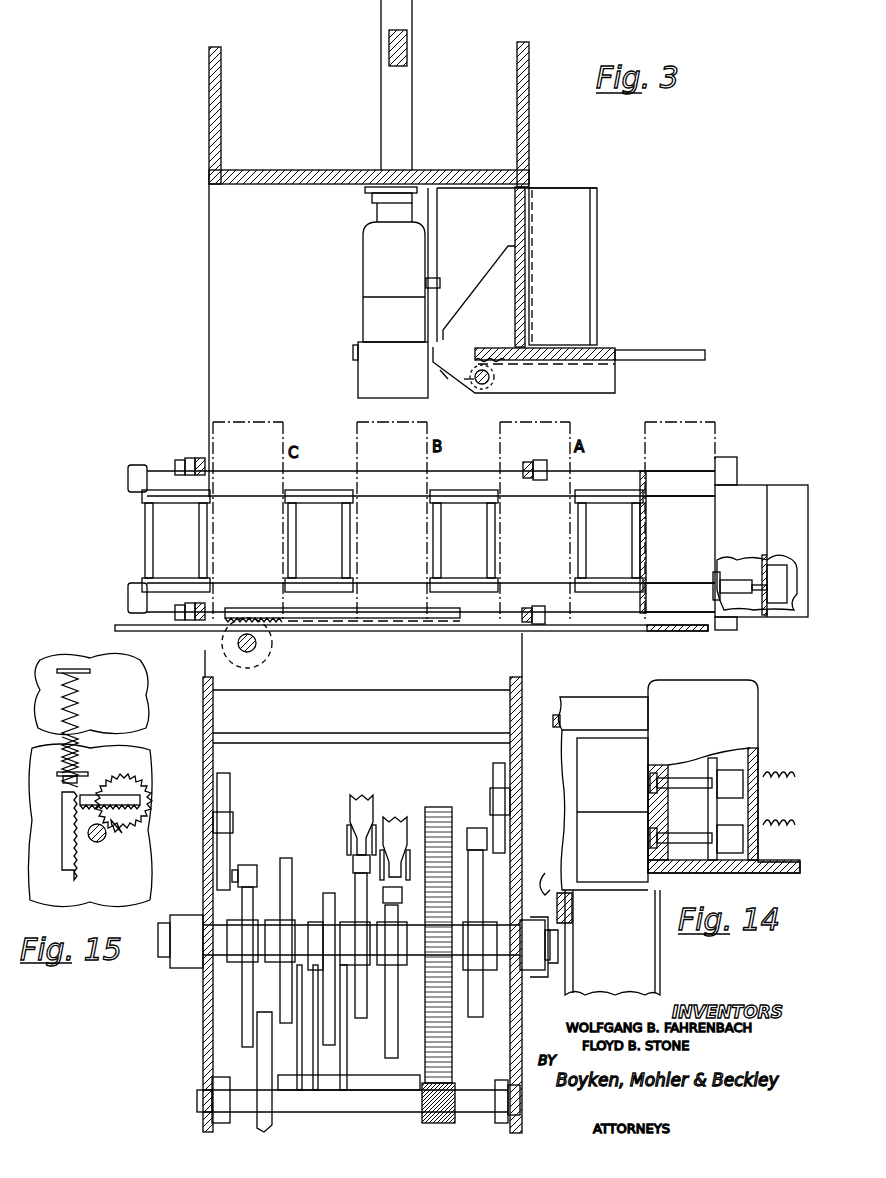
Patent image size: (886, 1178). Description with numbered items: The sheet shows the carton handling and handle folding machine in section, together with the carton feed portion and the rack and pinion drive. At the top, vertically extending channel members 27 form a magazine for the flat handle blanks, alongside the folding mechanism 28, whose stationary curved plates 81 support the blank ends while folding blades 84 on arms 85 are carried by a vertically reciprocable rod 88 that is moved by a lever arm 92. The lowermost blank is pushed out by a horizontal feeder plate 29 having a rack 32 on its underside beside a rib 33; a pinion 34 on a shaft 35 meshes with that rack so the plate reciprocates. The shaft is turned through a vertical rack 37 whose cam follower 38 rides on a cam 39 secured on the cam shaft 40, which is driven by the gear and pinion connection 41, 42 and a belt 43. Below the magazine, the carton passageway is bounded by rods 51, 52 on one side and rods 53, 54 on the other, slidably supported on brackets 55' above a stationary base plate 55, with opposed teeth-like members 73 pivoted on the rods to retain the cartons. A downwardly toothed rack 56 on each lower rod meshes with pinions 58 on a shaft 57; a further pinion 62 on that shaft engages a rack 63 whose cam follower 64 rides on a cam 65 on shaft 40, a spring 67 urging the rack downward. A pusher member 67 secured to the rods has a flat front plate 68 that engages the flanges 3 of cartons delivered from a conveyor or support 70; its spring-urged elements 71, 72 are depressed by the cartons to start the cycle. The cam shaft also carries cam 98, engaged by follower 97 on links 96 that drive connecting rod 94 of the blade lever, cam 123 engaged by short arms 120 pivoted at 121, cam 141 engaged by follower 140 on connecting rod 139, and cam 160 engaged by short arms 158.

In FIG. 14, the flange 3 is at (602, 890).
In FIG. 3, the channel members 27 is at (597, 256).
In FIG. 3, the folding mechanism 28 is at (454, 229).
In FIG. 3, the feeder plate 29 is at (610, 350).
In FIG. 3, the rack 32 is at (612, 372).
In FIG. 3, the rib 33 is at (443, 379).
In FIG. 3, the pinion 34 is at (474, 382).
In FIG. 3, the shaft 35 is at (482, 390).
In FIG. 3, the rack 37 is at (493, 770).
In FIG. 3, the cam follower 38 is at (472, 828).
In FIG. 3, the cam 39 is at (483, 906).
In FIG. 3, the shaft 40 is at (501, 963).
In FIG. 3, the gear 41 is at (452, 1061).
In FIG. 3, the pinion 42 is at (455, 1091).
In FIG. 3, the belt 43 is at (260, 1059).
In FIG. 3, the rod 51 is at (648, 472).
In FIG. 14, the rod 51 is at (600, 703).
In FIG. 3, the rod 52 is at (650, 631).
In FIG. 3, the rod 53 is at (603, 476).
In FIG. 14, the rod 53 is at (545, 877).
In FIG. 3, the rod 54 is at (578, 616).
In FIG. 3, the base plate 55 is at (387, 613).
In FIG. 14, the base plate 55 is at (592, 810).
In FIG. 3, the brackets 55' is at (377, 535).
In FIG. 3, the rack 56 is at (277, 623).
In FIG. 15, the rack 56 is at (103, 800).
In FIG. 3, the shaft 57 is at (238, 643).
In FIG. 15, the shaft 57 is at (105, 840).
In FIG. 3, the pinions 58 is at (263, 657).
In FIG. 15, the pinion 62 is at (118, 838).
In FIG. 3, the rack 63 is at (230, 810).
In FIG. 15, the rack 63 is at (62, 855).
In FIG. 3, the cam follower 64 is at (246, 865).
In FIG. 3, the cam 65 is at (242, 1017).
In FIG. 3, the pusher member 67 is at (753, 479).
In FIG. 14, the pusher member 67 is at (767, 699).
In FIG. 15, the pusher member 67 is at (82, 712).
In FIG. 14, the front plate 68 is at (648, 818).
In FIG. 14, the conveyor or support 70 is at (640, 985).
In FIG. 14, the movable element 71 is at (650, 790).
In FIG. 3, the movable element 72 is at (706, 594).
In FIG. 14, the movable element 72 is at (650, 840).
In FIG. 3, the teeth-like members 73 is at (155, 538).
In FIG. 3, the stationary plates 81 is at (358, 368).
In FIG. 3, the folding blades 84 is at (363, 313).
In FIG. 3, the arms 85 is at (363, 258).
In FIG. 3, the rod 88 is at (412, 118).
In FIG. 3, the lever arm 92 is at (408, 46).
In FIG. 3, the connecting rod 94 is at (360, 797).
In FIG. 3, the short links 96 is at (352, 828).
In FIG. 3, the cam follower 97 is at (353, 862).
In FIG. 3, the cam 98 is at (368, 1018).
In FIG. 3, the short arms 120 is at (345, 1076).
In FIG. 3, the pivot 121 is at (364, 1091).
In FIG. 3, the cam 123 is at (335, 902).
In FIG. 3, the connecting rod 139 is at (400, 818).
In FIG. 3, the cam follower 140 is at (393, 902).
In FIG. 3, the cam 141 is at (393, 1020).
In FIG. 3, the short arms 158 is at (290, 1072).
In FIG. 3, the cam 160 is at (292, 902).